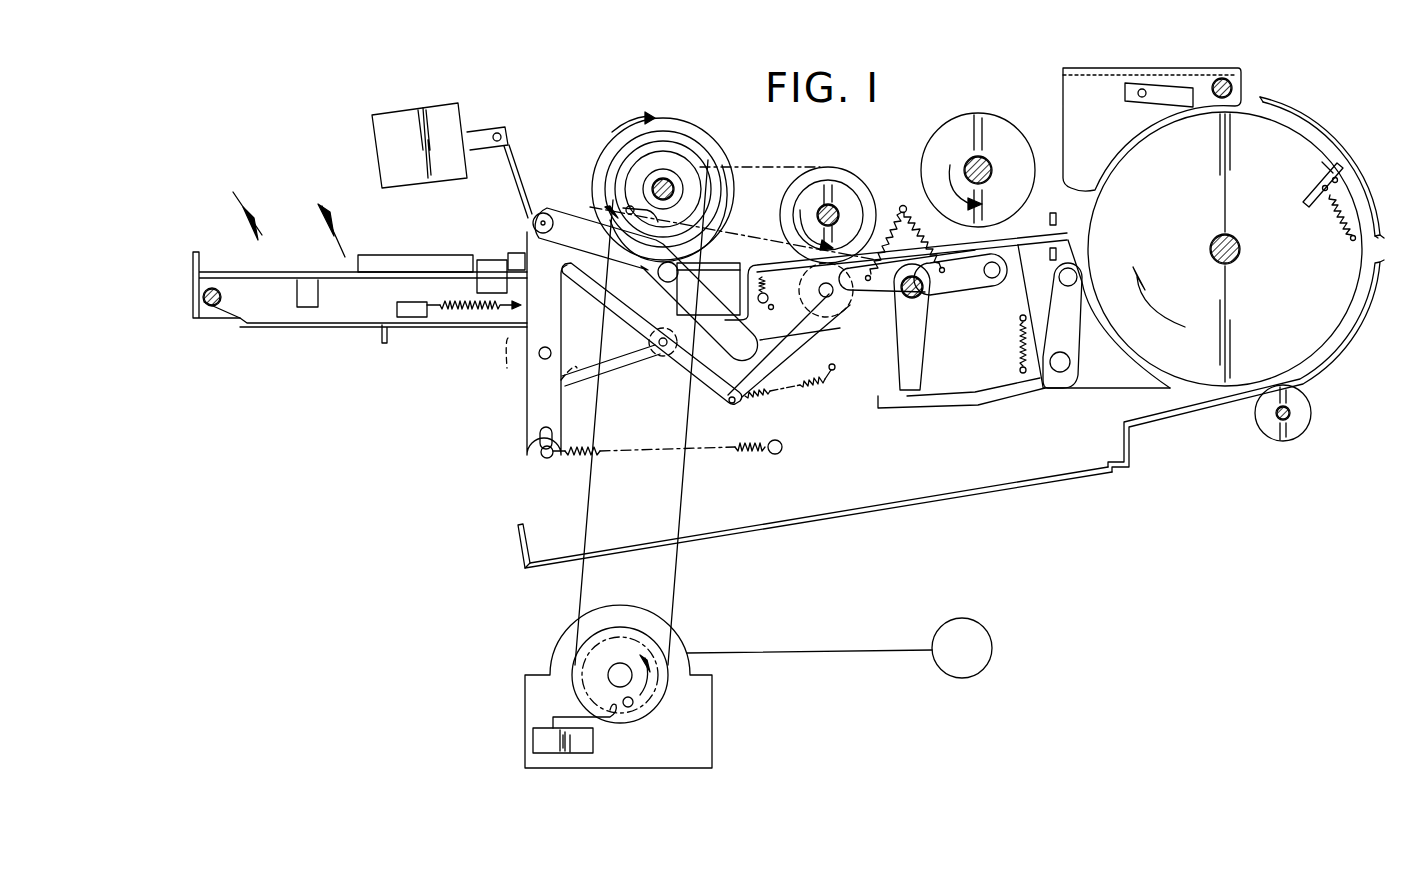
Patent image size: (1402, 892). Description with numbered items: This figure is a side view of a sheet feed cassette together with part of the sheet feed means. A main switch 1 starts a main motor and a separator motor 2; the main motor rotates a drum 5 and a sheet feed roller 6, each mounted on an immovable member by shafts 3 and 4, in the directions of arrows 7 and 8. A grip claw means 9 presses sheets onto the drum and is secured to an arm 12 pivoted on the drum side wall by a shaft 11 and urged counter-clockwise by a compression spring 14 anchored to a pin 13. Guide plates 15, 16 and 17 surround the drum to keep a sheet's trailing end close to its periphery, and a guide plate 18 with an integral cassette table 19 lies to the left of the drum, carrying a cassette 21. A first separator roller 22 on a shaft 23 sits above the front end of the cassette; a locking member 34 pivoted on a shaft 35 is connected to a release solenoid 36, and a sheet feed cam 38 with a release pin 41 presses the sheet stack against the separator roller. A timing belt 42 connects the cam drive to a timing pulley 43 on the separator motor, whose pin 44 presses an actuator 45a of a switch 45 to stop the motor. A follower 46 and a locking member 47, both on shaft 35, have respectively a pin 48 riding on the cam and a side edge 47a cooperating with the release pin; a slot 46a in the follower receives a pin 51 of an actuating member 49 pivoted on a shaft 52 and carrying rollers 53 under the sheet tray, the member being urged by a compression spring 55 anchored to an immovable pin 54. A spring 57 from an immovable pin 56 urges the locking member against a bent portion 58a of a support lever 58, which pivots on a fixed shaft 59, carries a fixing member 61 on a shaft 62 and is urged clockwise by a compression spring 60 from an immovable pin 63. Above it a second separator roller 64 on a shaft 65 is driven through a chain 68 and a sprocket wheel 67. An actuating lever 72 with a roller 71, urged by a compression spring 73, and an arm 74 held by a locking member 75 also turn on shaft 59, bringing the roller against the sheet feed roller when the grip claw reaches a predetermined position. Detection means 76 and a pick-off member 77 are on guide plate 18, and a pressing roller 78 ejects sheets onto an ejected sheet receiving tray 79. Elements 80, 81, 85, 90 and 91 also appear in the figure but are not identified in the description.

The main switch 1 is at (985, 640).
The separator motor 2 is at (665, 640).
The shaft 3 is at (1210, 245).
The shaft 4 is at (992, 170).
The drum 5 is at (1292, 368).
The sheet feed roller 6 is at (990, 128).
The arrow 7 is at (1175, 325).
The arrow 8 is at (958, 180).
The grip claw means 9 is at (1322, 162).
The shaft 11 is at (1328, 180).
The arm 12 is at (1318, 190).
The pin 13 is at (1351, 241).
The compression spring 14 is at (1336, 222).
The guide plate 15 is at (1063, 105).
The guide plate 16 is at (1296, 113).
The guide plate 17 is at (1352, 338).
The guide plate 18 is at (770, 262).
The cassette table 19 is at (412, 320).
The cassette 21 is at (236, 201).
The first separator roller 22 is at (650, 127).
The shaft 23 is at (655, 180).
The locking member 34 is at (512, 180).
The shaft 35 is at (532, 225).
The release solenoid 36 is at (410, 114).
The sheet feed cam 38 is at (692, 160).
The pin 41 is at (615, 195).
The timing belt 42 is at (570, 573).
The timing pulley 43 is at (598, 630).
The pin 44 is at (635, 705).
The switch 45 is at (535, 740).
The actuator 45a is at (614, 722).
The follower 46 is at (527, 335).
The slot 46a is at (547, 460).
The locking member 47 is at (673, 378).
The side edge 47a is at (611, 197).
The pin 48 is at (668, 282).
The actuating member 49 is at (620, 355).
The pin 51 is at (541, 448).
The shaft 52 is at (536, 360).
The rollers 53 is at (662, 352).
The immovable pin 54 is at (783, 444).
The compression spring 55 is at (742, 452).
The immovable pin 56 is at (836, 372).
The spring 57 is at (805, 388).
The support lever 58 is at (810, 330).
The bent portion 58a is at (838, 372).
The fixed shaft 59 is at (908, 340).
The compression spring 60 is at (873, 235).
The fixing member 61 is at (843, 332).
The shaft 62 is at (840, 305).
The immovable pin 63 is at (903, 205).
The second separator roller 64 is at (838, 172).
The shaft 65 is at (827, 200).
The sprocket wheel 67 is at (681, 158).
The chain 68 is at (780, 167).
The roller 71 is at (1003, 272).
The actuating lever 72 is at (920, 298).
The compression spring 73 is at (988, 292).
The arm 74 is at (935, 355).
The locking member 75 is at (910, 405).
The detection means 76 is at (1069, 229).
The pick-off member 77 is at (1097, 388).
The pressing roller 78 is at (1277, 440).
The ejected sheet receiving tray 79 is at (890, 512).
The shaft 80 is at (212, 306).
The tray bottom 81 is at (272, 322).
The tray step 85 is at (210, 312).
The arrow 90 is at (336, 230).
The tray 91 is at (248, 275).